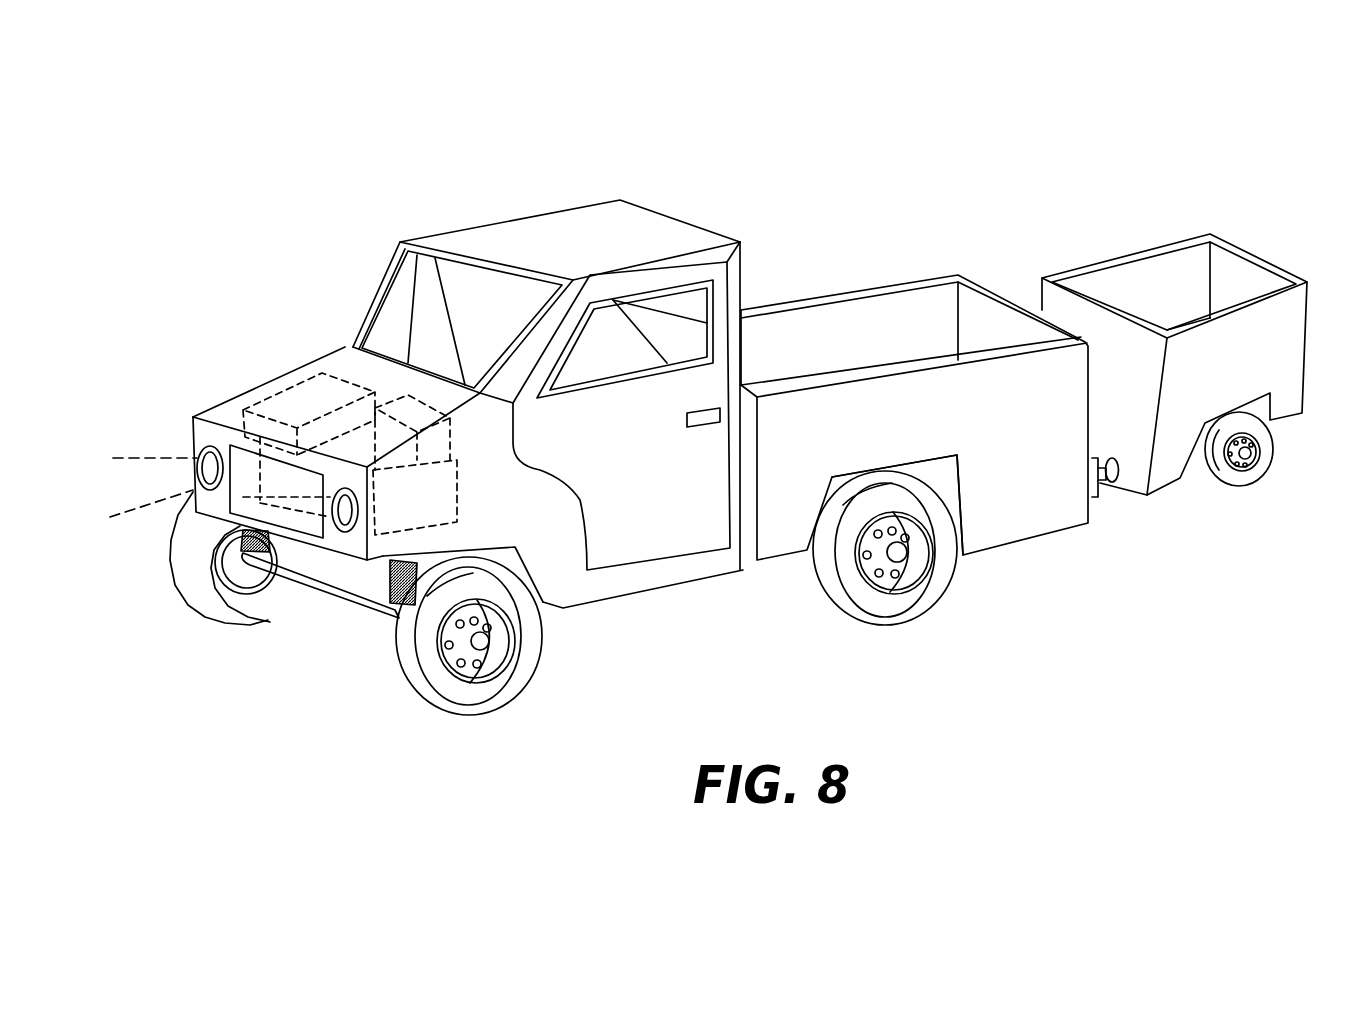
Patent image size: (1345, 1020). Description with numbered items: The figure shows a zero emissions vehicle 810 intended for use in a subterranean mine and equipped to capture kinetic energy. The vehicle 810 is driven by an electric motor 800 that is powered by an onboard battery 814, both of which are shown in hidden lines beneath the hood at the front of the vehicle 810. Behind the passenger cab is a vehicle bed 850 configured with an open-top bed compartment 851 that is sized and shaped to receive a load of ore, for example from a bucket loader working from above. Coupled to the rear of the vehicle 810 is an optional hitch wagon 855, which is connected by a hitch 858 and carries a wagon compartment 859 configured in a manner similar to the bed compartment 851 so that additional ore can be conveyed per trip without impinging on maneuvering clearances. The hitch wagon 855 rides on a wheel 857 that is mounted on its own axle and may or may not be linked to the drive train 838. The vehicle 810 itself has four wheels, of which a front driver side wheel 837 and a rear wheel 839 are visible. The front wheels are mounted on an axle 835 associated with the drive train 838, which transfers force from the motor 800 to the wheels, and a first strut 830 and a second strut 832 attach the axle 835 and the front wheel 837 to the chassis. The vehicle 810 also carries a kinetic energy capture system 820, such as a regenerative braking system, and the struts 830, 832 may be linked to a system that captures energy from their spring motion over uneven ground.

The electric motor 800 is at (267, 407).
The zero emissions vehicle 810 is at (743, 152).
The onboard battery 814 is at (383, 433).
The kinetic energy capture system 820 is at (418, 503).
The first strut 830 is at (372, 607).
The second strut 832 is at (197, 492).
The axle 835 is at (312, 577).
The front driver side wheel 837 is at (490, 697).
The drive train 838 is at (547, 597).
The rear wheel 839 is at (898, 608).
The vehicle bed 850 is at (912, 320).
The bed compartment 851 is at (818, 333).
The hitch wagon 855 is at (1147, 275).
The wheel 857 is at (1250, 483).
The hitch 858 is at (1103, 486).
The wagon compartment 859 is at (1188, 282).